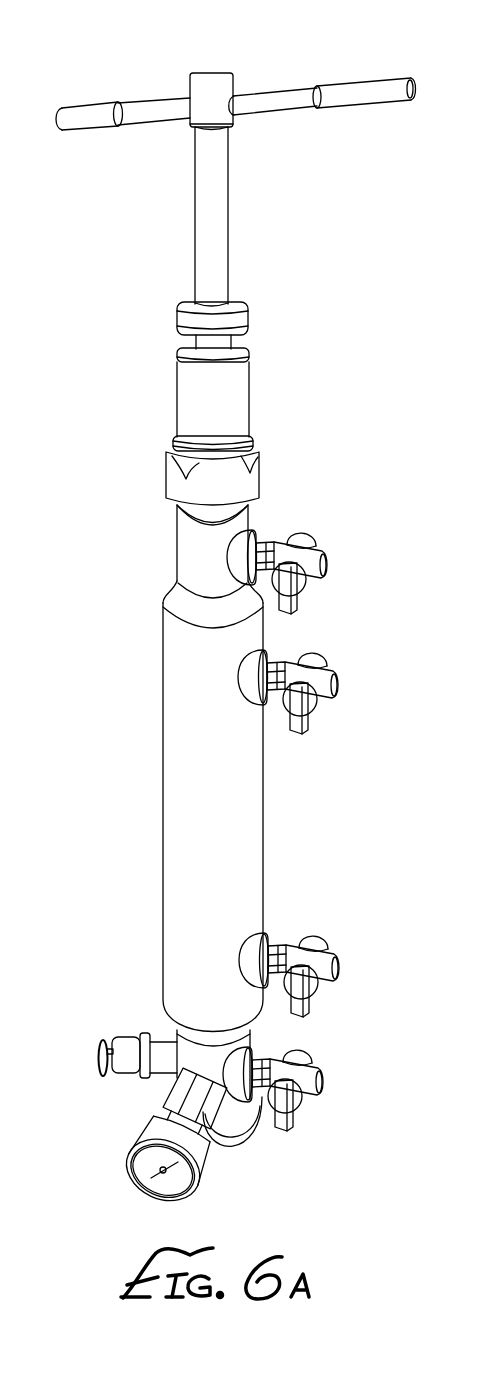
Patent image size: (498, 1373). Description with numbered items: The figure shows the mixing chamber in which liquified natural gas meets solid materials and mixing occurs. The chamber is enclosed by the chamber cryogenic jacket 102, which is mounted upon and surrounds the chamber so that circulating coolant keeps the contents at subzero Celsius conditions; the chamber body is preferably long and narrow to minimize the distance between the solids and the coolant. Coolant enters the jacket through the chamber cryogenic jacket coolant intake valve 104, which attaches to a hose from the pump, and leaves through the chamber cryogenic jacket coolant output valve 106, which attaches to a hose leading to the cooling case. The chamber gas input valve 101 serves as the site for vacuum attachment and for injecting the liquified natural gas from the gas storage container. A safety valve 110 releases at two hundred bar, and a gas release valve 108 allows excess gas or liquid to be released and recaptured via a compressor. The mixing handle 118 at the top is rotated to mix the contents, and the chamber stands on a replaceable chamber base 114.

The chamber gas input valve 101 is at (327, 1078).
The chamber cryogenic jacket 102 is at (200, 813).
The chamber cryogenic jacket coolant intake valve 104 is at (340, 968).
The chamber cryogenic jacket coolant output valve 106 is at (340, 682).
The gas release valve 108 is at (305, 541).
The safety valve 110 is at (120, 1038).
The replaceable chamber base 114 is at (240, 1148).
The mixing handle 118 is at (213, 72).